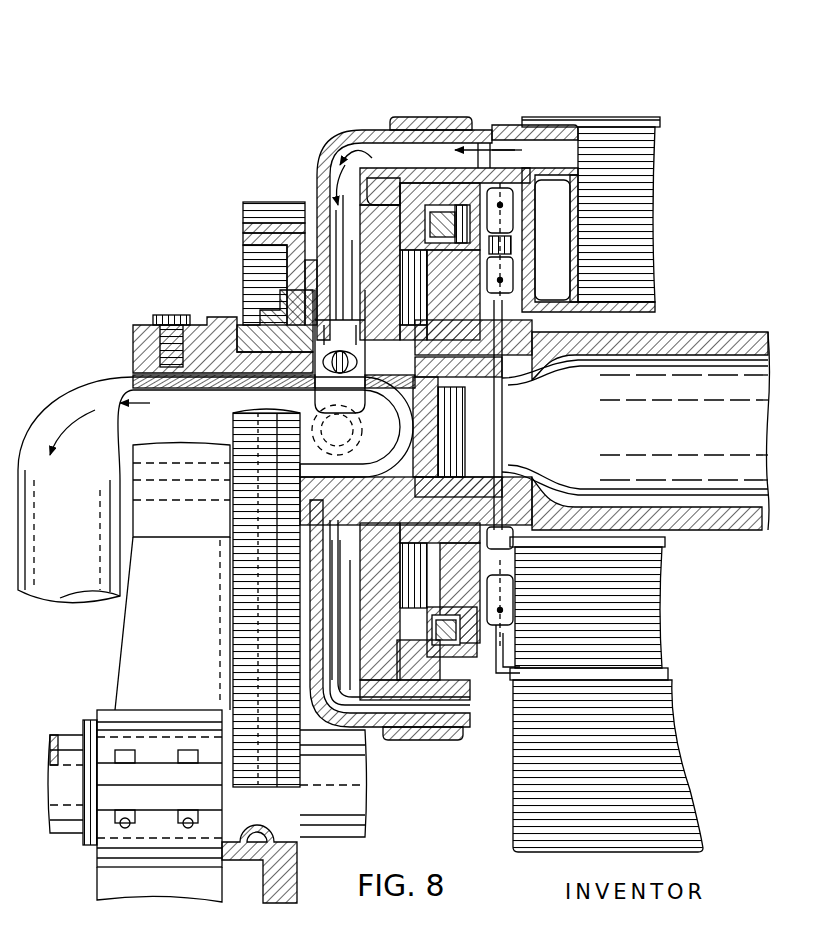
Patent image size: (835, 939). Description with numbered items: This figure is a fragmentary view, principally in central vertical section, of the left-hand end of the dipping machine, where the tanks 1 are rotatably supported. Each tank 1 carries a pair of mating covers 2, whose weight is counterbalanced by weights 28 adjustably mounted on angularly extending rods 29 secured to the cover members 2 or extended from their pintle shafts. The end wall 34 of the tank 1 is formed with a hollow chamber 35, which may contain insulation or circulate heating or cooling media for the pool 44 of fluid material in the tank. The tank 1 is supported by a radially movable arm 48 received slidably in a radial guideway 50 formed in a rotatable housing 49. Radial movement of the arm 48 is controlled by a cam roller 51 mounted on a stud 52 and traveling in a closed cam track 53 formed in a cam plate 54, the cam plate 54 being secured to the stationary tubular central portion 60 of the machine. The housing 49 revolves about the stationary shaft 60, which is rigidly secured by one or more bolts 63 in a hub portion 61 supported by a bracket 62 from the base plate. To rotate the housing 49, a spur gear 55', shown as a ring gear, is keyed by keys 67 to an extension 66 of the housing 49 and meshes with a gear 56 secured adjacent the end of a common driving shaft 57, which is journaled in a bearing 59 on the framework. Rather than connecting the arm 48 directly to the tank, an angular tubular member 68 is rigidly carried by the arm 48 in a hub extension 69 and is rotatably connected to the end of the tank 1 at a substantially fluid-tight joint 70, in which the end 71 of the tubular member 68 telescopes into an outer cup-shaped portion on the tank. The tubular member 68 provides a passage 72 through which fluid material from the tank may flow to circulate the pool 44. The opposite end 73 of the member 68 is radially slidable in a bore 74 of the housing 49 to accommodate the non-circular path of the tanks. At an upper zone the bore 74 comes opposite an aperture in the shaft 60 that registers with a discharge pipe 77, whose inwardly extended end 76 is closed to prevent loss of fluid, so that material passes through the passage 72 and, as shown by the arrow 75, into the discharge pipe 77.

The tank 1 is at (515, 823).
The mating cover 2 is at (632, 117).
The counterbalance weight 28 is at (497, 200).
The angularly extending rod 29 is at (498, 680).
The end wall 34 is at (578, 227).
The hollow chamber 35 is at (562, 265).
The pool of fluid 44 is at (648, 173).
The radially movable arm 48 is at (402, 200).
The rotatable housing 49 is at (333, 207).
The radial guideway 50 is at (358, 143).
The cam roller 51 is at (447, 187).
The stud 52 is at (420, 700).
The cam track 53 is at (448, 700).
The cam plate 54 is at (660, 652).
The spur gear 55' is at (255, 205).
The gear 56 is at (283, 790).
The driving shaft 57 is at (56, 835).
The bearing 59 is at (157, 810).
The tubular central shaft portion 60 is at (138, 375).
The hub portion 61 is at (127, 323).
The bracket 62 is at (127, 660).
The bolt 63 is at (172, 315).
The extension of housing 66 is at (287, 253).
The key 67 is at (277, 238).
The angular tubular member 68 is at (368, 130).
The hub extension 69 is at (423, 117).
The fluid-tight joint 70 is at (505, 128).
The end of tubular member 71 is at (483, 140).
The passage 72 is at (360, 263).
The opposite end of tubular member 73 is at (305, 312).
The bore 74 is at (318, 305).
The arrow 75 is at (300, 398).
The inwardly extended end of pipe 76 is at (392, 403).
The discharge pipe 77 is at (70, 392).